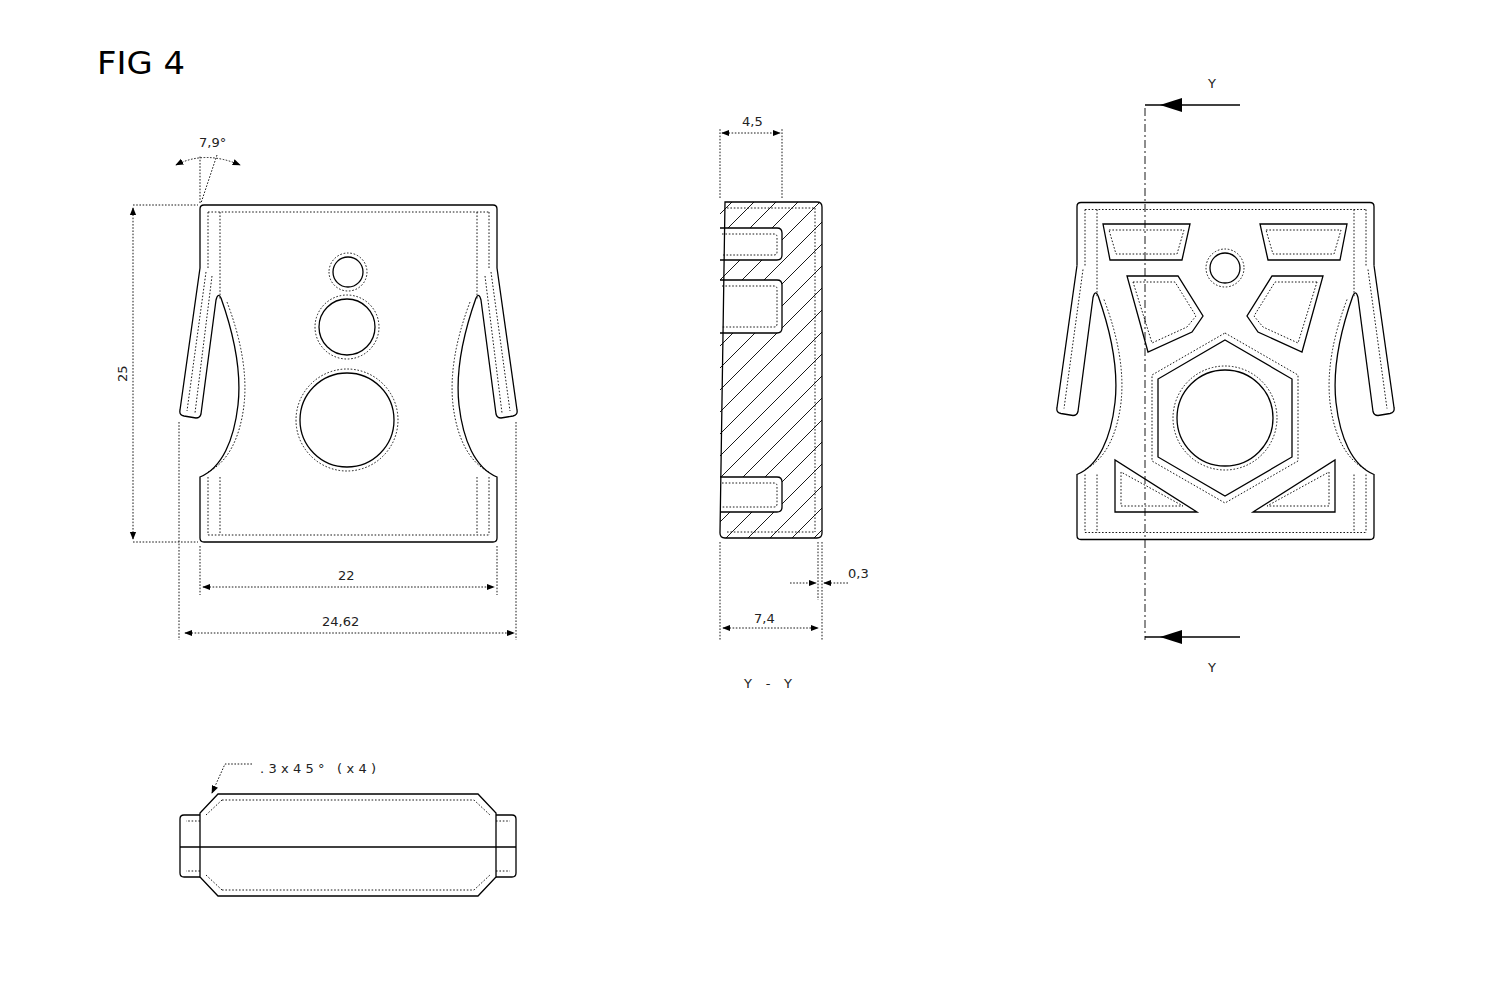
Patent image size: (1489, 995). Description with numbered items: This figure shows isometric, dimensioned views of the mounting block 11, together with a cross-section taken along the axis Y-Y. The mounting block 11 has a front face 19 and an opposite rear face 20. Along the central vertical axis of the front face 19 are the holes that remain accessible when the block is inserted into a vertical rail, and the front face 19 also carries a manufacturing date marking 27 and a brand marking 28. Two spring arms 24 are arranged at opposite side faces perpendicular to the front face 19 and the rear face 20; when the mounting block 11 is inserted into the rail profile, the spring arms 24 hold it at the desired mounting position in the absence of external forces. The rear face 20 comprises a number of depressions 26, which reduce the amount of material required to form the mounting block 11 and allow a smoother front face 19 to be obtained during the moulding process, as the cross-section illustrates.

The mounting block 11 is at (418, 274).
The front face 19 is at (822, 362).
The rear face 20 is at (720, 396).
The spring arms 24 is at (513, 374).
The depressions 26 is at (732, 302).
The manufacturing date marking 27 is at (378, 324).
The brand marking 28 is at (428, 498).